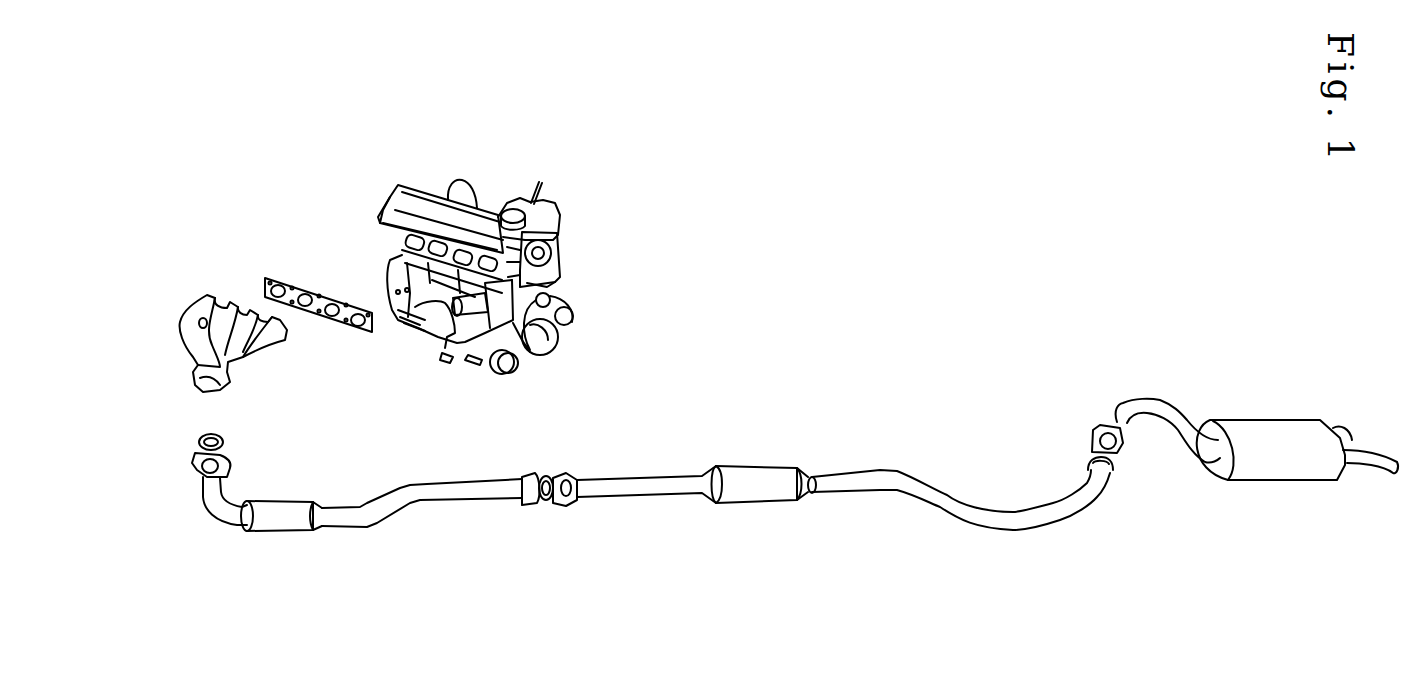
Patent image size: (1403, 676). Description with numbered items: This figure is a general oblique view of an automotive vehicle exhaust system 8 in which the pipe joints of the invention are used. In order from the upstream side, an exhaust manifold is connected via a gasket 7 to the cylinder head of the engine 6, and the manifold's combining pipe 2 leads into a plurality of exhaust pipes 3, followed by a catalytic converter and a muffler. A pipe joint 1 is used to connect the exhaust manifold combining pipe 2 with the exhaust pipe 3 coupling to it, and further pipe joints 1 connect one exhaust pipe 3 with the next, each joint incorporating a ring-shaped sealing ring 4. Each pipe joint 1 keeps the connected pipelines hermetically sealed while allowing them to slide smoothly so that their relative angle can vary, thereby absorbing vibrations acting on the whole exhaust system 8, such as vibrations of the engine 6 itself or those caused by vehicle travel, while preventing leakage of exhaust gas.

The pipe joint 1 is at (182, 410).
The exhaust manifold combining pipe 2 is at (218, 366).
The exhaust pipe 3 is at (460, 499).
The ring-shaped sealing ring 4 is at (223, 443).
The engine 6 is at (503, 171).
The gasket 7 is at (290, 278).
The exhaust system 8 is at (758, 377).